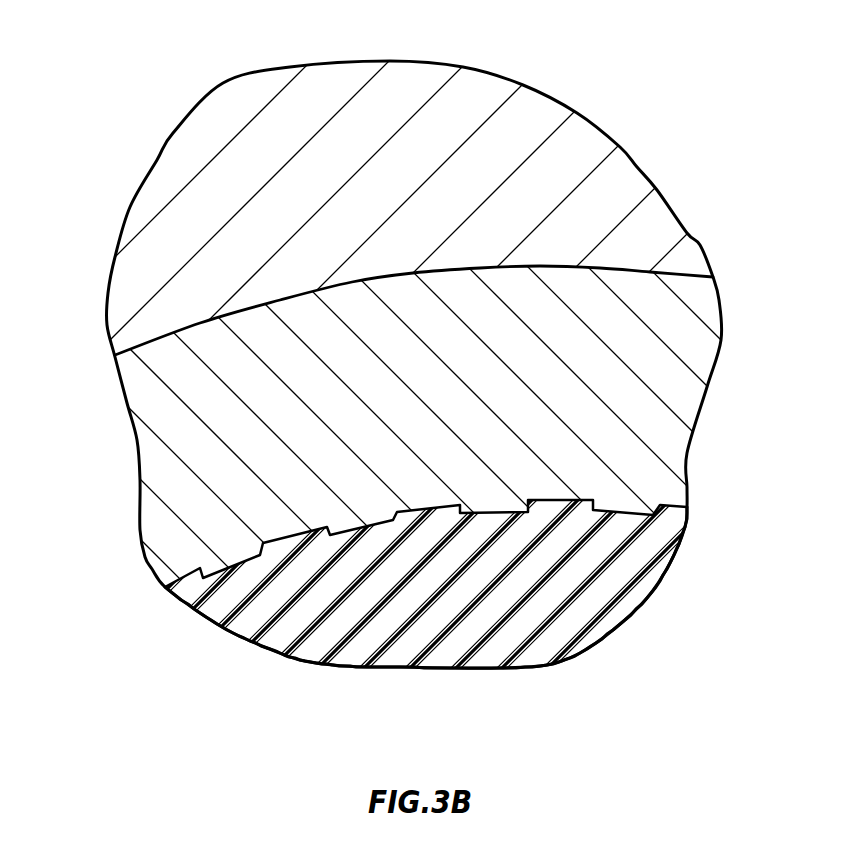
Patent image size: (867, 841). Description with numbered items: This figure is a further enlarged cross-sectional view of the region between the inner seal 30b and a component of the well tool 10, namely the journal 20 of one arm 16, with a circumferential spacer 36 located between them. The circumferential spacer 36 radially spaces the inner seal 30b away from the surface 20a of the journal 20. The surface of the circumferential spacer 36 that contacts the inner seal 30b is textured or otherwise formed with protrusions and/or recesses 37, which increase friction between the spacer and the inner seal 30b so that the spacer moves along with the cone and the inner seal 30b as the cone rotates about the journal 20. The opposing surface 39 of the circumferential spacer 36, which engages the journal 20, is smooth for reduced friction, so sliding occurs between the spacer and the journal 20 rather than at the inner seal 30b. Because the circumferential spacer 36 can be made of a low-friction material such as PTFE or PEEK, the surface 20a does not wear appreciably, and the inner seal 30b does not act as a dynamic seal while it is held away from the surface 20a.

The well tool 10 is at (433, 369).
The arm 16 is at (166, 129).
The journal 20 is at (638, 165).
The surface 20a is at (157, 346).
The opposing surface 39 is at (352, 282).
The circumferential spacer 36 is at (140, 558).
The protrusions and/or recesses 37 is at (288, 538).
The inner seal 30b is at (348, 668).